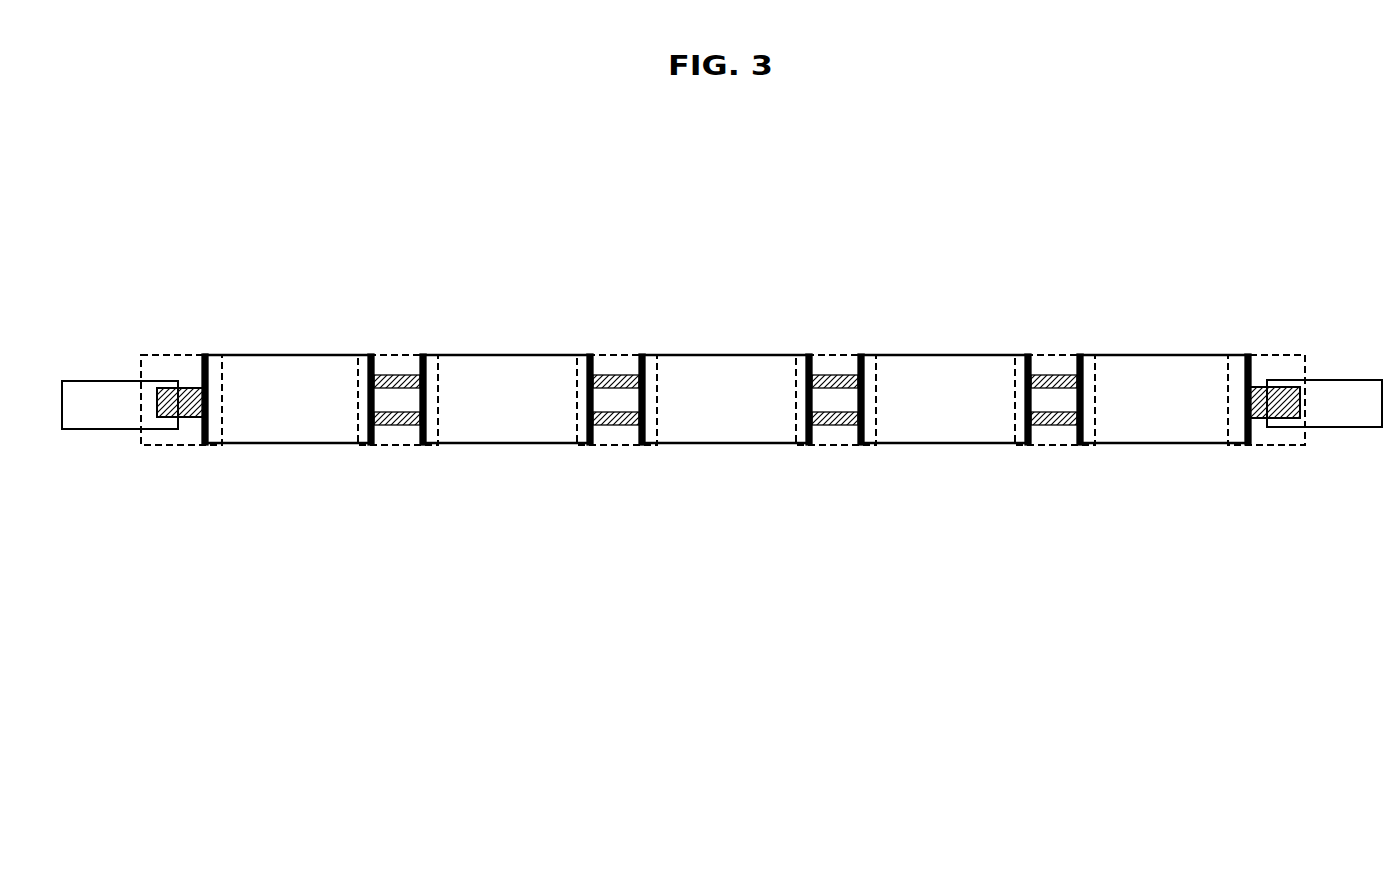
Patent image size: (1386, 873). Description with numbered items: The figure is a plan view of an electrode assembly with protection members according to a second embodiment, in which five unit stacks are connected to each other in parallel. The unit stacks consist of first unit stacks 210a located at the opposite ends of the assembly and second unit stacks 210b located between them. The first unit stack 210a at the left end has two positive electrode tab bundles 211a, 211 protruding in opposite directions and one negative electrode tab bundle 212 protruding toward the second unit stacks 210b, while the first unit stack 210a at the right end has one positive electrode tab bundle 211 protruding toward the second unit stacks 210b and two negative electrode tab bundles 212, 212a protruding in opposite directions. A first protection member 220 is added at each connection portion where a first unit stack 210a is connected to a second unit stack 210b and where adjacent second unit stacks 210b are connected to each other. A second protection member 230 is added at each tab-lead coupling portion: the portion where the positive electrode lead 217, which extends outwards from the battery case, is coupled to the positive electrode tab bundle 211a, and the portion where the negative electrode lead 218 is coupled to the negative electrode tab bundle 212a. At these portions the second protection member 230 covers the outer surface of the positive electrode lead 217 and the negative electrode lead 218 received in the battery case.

The first unit stack 210a is at (272, 355).
The second unit stack 210b is at (497, 355).
The positive electrode tab bundle 211 is at (380, 425).
The negative electrode tab bundle 212 is at (386, 375).
The positive electrode tab bundle 211a is at (167, 418).
The negative electrode tab bundle 212a is at (1283, 418).
The positive electrode lead 217 is at (95, 428).
The negative electrode lead 218 is at (1347, 420).
The first protection member 220 is at (393, 375).
The second protection member 230 is at (175, 355).